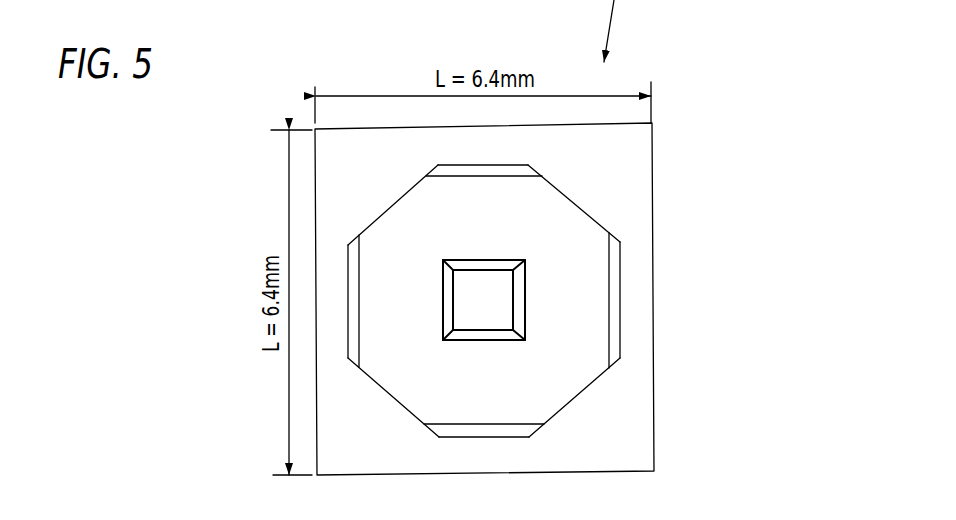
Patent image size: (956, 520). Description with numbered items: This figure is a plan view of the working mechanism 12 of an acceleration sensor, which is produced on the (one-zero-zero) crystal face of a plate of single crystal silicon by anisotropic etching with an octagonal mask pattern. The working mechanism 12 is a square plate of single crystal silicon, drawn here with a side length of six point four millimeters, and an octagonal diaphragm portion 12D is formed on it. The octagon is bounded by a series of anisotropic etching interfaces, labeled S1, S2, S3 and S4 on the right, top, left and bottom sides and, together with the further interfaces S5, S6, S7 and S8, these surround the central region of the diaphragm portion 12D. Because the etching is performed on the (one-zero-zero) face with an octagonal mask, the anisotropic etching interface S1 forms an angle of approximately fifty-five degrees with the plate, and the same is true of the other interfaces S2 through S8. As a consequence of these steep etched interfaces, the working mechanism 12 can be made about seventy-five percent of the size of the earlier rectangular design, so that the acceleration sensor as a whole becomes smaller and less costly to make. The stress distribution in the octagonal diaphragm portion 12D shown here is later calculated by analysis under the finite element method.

The working mechanism 12 is at (656, 129).
The octagonal diaphragm portion 12D is at (493, 233).
The anisotropic etching interface S1 is at (615, 272).
The anisotropic etching interface S2 is at (454, 168).
The anisotropic etching interface S3 is at (368, 275).
The anisotropic etching interface S4 is at (460, 432).
The anisotropic etching interface S5 is at (519, 310).
The anisotropic etching interface S6 is at (507, 260).
The anisotropic etching interface S7 is at (443, 298).
The anisotropic etching interface S8 is at (500, 340).